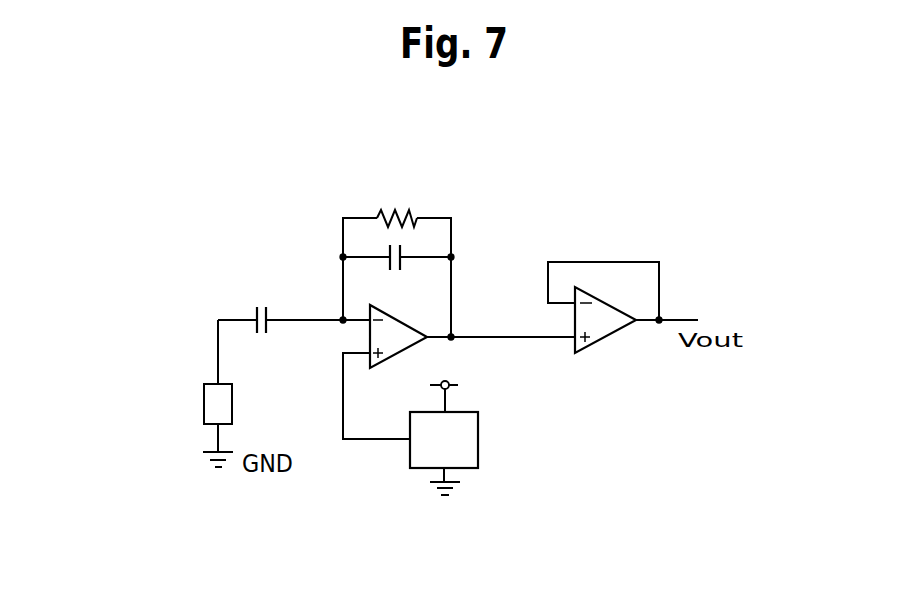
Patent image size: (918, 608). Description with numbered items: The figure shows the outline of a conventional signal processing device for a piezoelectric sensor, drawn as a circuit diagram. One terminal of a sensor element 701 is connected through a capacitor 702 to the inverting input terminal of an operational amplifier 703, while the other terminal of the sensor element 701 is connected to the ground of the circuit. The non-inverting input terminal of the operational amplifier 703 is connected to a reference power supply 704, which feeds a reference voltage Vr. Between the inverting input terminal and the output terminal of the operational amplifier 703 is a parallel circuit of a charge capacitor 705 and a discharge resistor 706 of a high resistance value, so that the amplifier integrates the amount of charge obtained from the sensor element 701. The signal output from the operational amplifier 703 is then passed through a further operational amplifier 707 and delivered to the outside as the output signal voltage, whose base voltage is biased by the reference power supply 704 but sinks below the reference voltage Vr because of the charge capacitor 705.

The sensor element 701 is at (232, 403).
The capacitor 702 is at (255, 313).
The operational amplifier 703 is at (410, 347).
The reference power supply 704 is at (478, 450).
The charge capacitor 705 is at (400, 267).
The discharge resistor 706 is at (398, 210).
The operational amplifier 707 is at (607, 338).